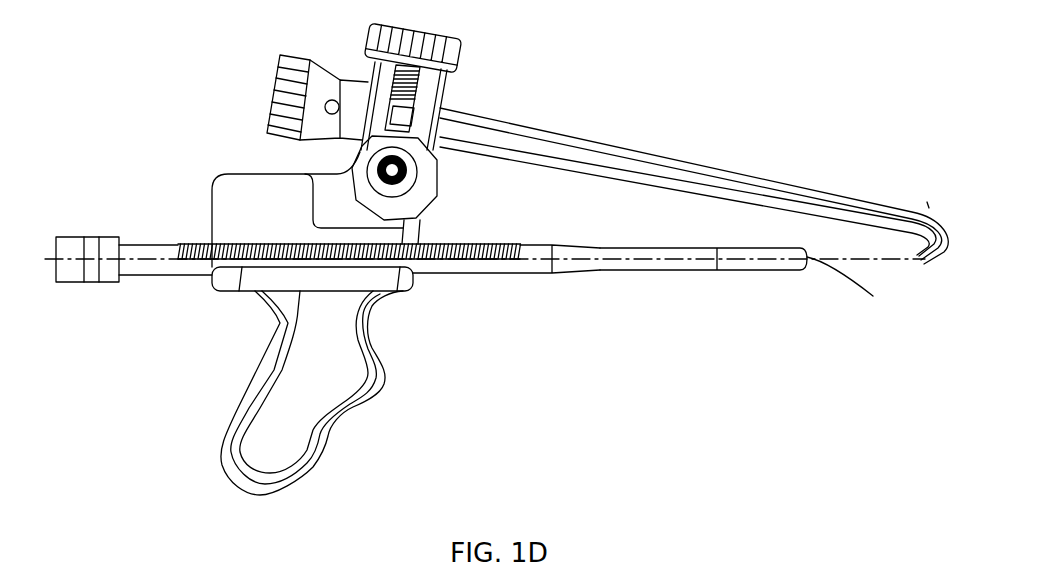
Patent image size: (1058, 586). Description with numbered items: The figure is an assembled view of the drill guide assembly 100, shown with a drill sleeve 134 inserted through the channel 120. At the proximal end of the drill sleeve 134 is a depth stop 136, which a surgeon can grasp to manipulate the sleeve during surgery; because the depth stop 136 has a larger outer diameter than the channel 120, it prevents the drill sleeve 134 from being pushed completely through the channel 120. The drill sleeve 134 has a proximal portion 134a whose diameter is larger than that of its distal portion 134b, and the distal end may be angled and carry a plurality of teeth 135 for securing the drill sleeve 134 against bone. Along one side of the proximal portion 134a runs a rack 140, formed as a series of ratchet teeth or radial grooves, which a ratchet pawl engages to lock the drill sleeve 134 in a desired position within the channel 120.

The drill guide assembly 100 is at (779, 113).
The channel 120 is at (243, 273).
The drill sleeve 134 is at (514, 272).
The proximal portion 134a is at (150, 270).
The distal portion 134b is at (670, 265).
The teeth 135 is at (873, 296).
The depth stop 136 is at (70, 247).
The rack 140 is at (437, 261).